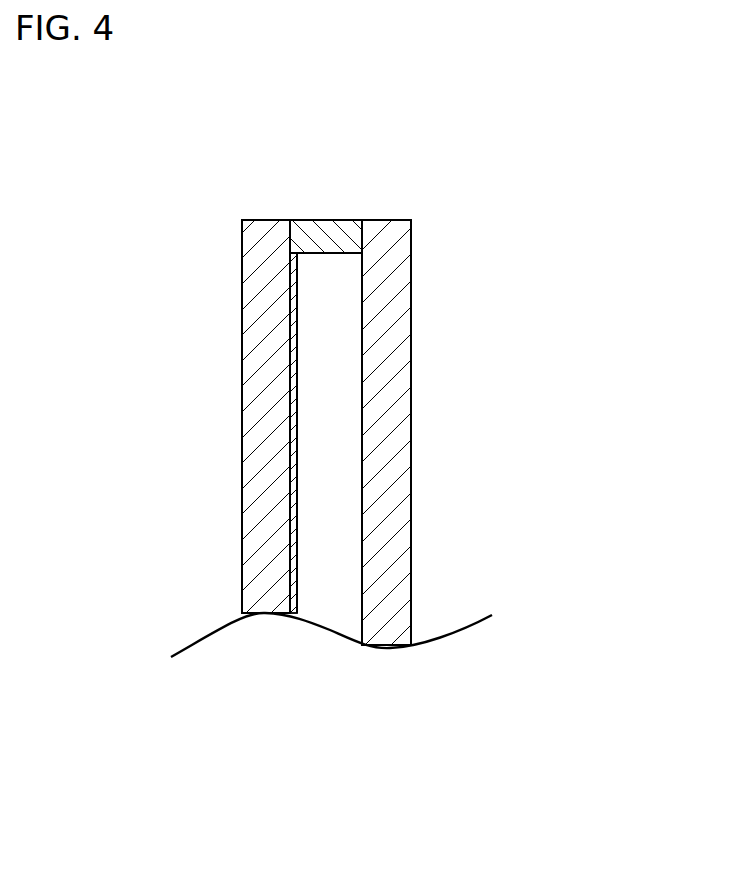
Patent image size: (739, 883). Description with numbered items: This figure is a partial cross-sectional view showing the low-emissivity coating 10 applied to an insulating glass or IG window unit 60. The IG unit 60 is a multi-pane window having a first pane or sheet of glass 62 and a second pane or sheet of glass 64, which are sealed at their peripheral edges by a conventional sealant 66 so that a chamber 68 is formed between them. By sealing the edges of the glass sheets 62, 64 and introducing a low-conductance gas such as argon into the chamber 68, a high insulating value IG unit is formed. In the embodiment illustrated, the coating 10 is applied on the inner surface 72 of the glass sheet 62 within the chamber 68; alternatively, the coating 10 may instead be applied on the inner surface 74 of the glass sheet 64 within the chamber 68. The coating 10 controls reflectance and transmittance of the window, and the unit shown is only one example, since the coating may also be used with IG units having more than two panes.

The IG window unit 60 is at (557, 235).
The first sheet of glass 62 is at (238, 326).
The second sheet of glass 64 is at (415, 430).
The sealant 66 is at (325, 218).
The low-emissivity coating 10 is at (298, 612).
The chamber 68 is at (332, 582).
The inner surface of glass sheet 62 72 is at (293, 592).
The inner surface of glass sheet 64 74 is at (362, 580).